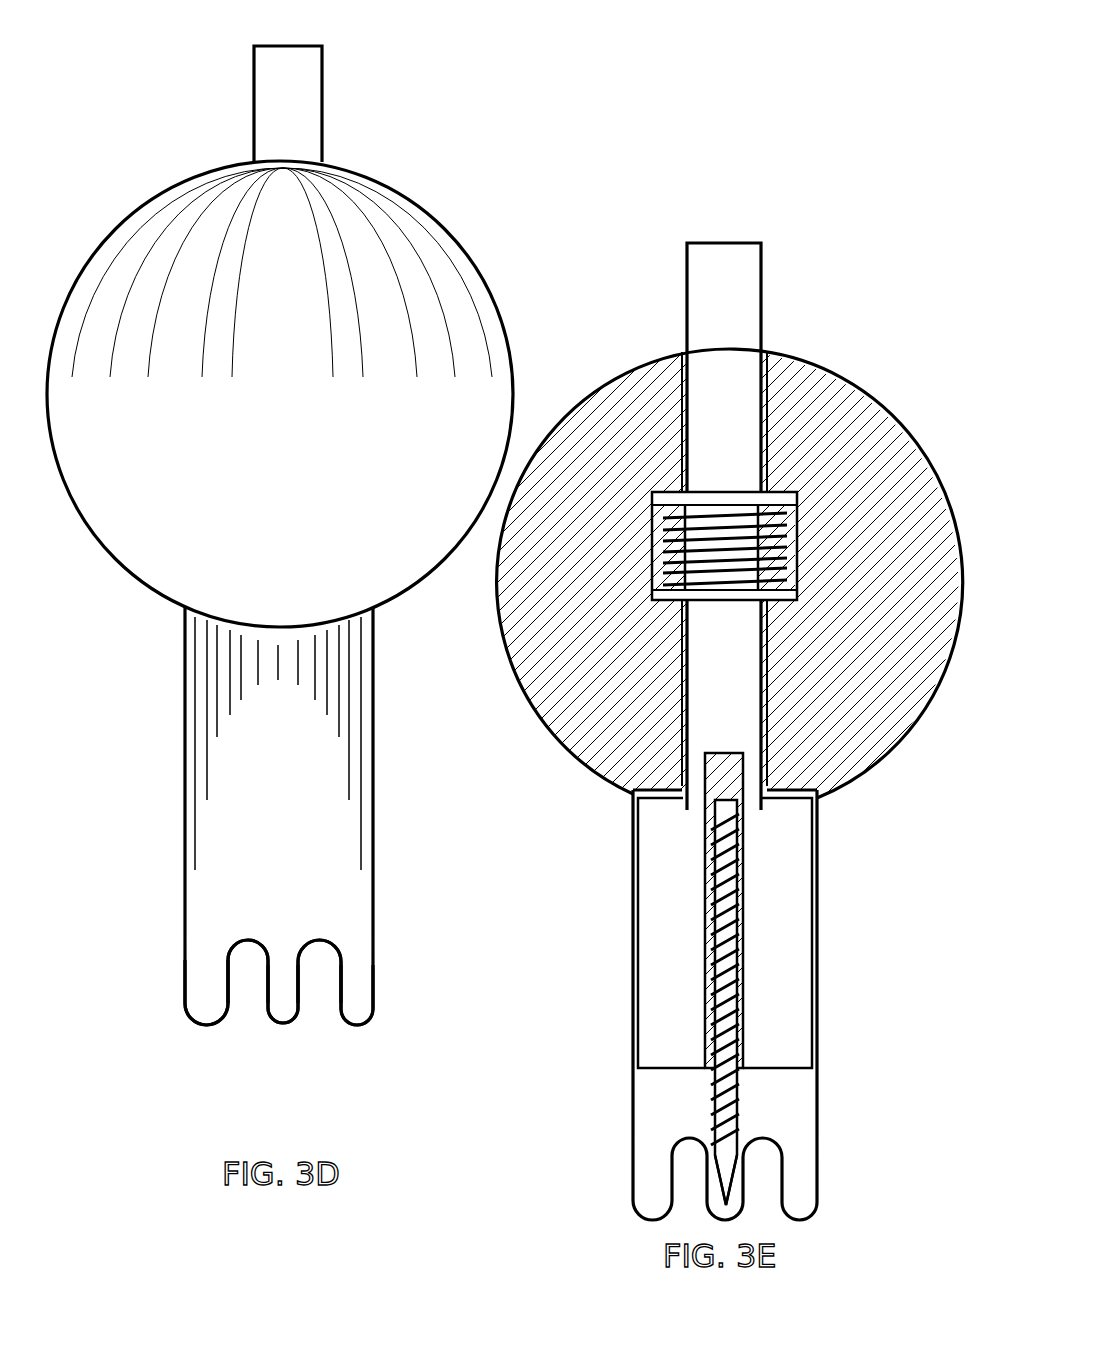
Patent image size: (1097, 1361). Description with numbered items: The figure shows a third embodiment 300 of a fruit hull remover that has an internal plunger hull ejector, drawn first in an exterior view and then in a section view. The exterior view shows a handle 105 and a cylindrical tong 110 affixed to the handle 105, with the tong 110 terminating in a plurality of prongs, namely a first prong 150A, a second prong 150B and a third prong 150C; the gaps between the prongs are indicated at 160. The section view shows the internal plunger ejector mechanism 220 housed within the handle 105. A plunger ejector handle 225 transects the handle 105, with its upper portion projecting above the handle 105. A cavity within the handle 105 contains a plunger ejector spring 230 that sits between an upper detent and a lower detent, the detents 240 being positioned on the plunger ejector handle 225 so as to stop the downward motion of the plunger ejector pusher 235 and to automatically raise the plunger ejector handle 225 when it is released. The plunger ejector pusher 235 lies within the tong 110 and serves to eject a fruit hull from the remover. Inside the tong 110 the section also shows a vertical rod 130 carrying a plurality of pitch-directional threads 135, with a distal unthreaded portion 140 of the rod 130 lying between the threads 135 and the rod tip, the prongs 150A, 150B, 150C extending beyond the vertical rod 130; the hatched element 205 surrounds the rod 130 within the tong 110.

In FIG. 3D, the third embodiment 300 is at (493, 46).
In FIG. 3D, the handle 105 is at (280, 394).
In FIG. 3D, the at least one tong 110 is at (279, 815).
In FIG. 3D, the first of an at least one prong 150A is at (184, 987).
In FIG. 3D, the second of an at least one prong 150B is at (279, 981).
In FIG. 3D, the third of an at least one prong 150C is at (378, 983).
In FIG. 3D, the gaps between prongs 160 is at (342, 1028).
In FIG. 3E, the internal plunger ejector mechanism 220 is at (717, 242).
In FIG. 3D, the plunger ejector handle 225 is at (313, 113).
In FIG. 3E, the plunger ejector handle 225 is at (682, 287).
In FIG. 3E, the plunger ejector spring 230 is at (646, 560).
In FIG. 3E, the detents 240 is at (796, 592).
In FIG. 3E, the plunger ejector pusher 235 is at (725, 1005).
In FIG. 3E, the nut 205 is at (704, 807).
In FIG. 3E, the vertical rod 130 is at (713, 849).
In FIG. 3E, the plurality of pitch-directional threads 135 is at (713, 969).
In FIG. 3E, the distal unthreaded portion 140 is at (722, 1147).